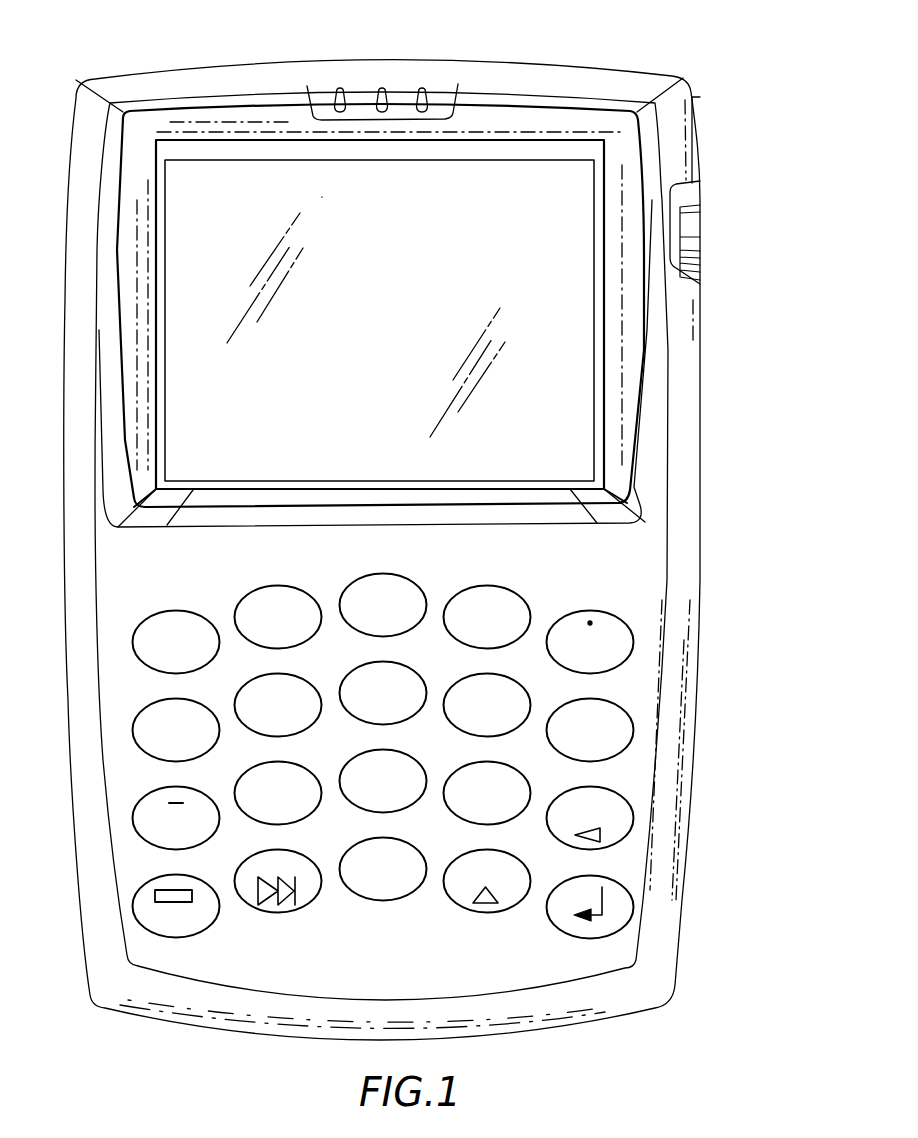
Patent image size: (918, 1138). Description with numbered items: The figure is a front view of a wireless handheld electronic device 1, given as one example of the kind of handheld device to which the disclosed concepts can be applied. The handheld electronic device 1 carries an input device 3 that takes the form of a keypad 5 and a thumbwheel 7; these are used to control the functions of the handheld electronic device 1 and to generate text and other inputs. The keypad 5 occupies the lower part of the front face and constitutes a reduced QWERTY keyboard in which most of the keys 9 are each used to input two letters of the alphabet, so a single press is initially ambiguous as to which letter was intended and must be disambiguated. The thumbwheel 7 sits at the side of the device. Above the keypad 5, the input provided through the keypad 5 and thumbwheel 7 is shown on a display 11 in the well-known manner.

The handheld electronic device 1 is at (45, 636).
The input device 3 is at (652, 562).
The keypad 5 is at (514, 951).
The thumbwheel 7 is at (703, 225).
The keys 9 is at (500, 586).
The display 11 is at (556, 178).